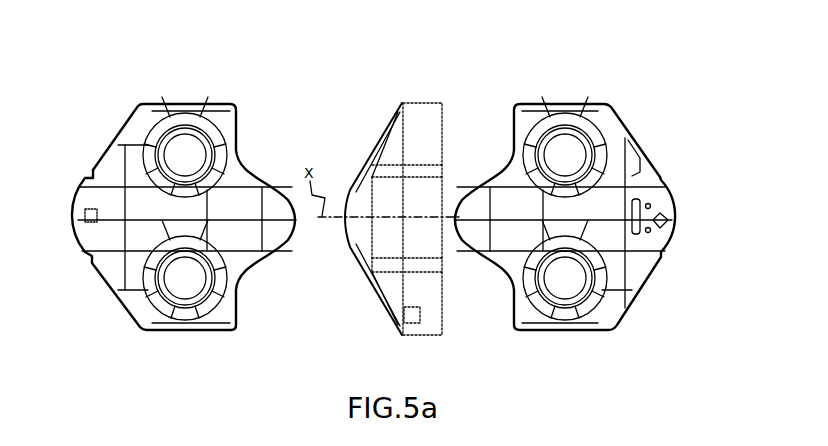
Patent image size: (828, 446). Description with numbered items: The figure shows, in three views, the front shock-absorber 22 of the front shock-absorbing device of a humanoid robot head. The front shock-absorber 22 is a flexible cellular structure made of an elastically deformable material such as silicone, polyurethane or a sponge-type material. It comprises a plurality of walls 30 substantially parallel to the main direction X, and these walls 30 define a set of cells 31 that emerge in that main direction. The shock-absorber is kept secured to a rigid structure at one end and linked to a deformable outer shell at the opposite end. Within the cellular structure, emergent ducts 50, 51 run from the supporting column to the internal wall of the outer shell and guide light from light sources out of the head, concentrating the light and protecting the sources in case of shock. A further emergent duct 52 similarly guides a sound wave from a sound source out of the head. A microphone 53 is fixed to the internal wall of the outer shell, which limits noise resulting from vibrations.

The front shock-absorber 22 is at (312, 72).
The walls 30 is at (617, 108).
The cells 31 is at (638, 165).
The emergent duct 50 is at (128, 118).
The emergent duct 51 is at (177, 282).
The emergent duct 52 is at (190, 112).
The microphone 53 is at (656, 221).